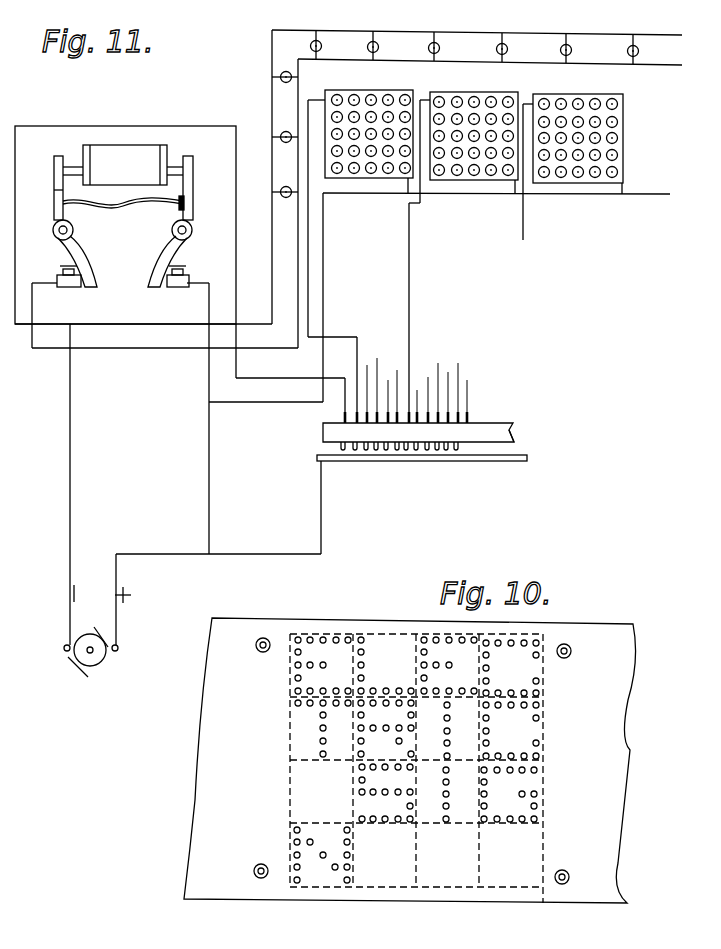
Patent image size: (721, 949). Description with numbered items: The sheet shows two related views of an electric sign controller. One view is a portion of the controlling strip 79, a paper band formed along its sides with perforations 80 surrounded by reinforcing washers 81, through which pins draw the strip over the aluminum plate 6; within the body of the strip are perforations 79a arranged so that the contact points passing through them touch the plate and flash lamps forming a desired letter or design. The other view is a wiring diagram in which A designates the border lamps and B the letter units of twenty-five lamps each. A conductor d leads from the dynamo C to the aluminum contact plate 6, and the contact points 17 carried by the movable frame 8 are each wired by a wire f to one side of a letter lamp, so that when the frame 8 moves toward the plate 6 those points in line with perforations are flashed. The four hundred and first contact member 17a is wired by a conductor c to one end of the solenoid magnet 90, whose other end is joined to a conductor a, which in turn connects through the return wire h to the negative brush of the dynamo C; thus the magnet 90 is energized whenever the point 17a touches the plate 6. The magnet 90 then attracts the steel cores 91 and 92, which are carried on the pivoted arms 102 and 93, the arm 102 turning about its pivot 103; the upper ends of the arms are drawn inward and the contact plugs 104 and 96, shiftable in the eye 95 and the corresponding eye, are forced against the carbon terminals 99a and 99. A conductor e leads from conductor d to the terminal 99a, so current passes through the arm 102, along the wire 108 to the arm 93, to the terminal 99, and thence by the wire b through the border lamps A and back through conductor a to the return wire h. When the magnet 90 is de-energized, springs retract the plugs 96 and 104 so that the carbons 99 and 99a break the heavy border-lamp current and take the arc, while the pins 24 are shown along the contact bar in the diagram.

In FIG. 11, the solenoid magnet 90 is at (130, 141).
In FIG. 11, the steel core 91 is at (184, 151).
In FIG. 11, the steel core 92 is at (76, 151).
In FIG. 11, the arm 93 is at (56, 189).
In FIG. 11, the eye 95 is at (98, 286).
In FIG. 11, the contact plug 96 is at (84, 292).
In FIG. 11, the carbon terminal 99 is at (82, 278).
In FIG. 11, the carbon terminal 99a is at (186, 261).
In FIG. 11, the arm 102 is at (193, 206).
In FIG. 11, the pivot 103 is at (199, 238).
In FIG. 11, the contact plug 104 is at (170, 290).
In FIG. 11, the wire 108 is at (128, 207).
In FIG. 11, the contact member 17 is at (468, 417).
In FIG. 11, the contact member 17a is at (343, 424).
In FIG. 11, the contact pins 24 is at (460, 375).
In FIG. 11, the movable frame 8 is at (522, 426).
In FIG. 11, the aluminum plate 6 is at (482, 465).
In FIG. 11, the border lamps A is at (477, 176).
In FIG. 11, the letter units B is at (478, 176).
In FIG. 11, the dynamo C is at (73, 652).
In FIG. 11, the conductor a is at (270, 320).
In FIG. 11, the wire b is at (478, 59).
In FIG. 11, the conductor c is at (388, 197).
In FIG. 11, the conductor d is at (143, 552).
In FIG. 11, the conductor e is at (209, 471).
In FIG. 11, the wire f is at (308, 299).
In FIG. 11, the return wire h is at (70, 487).
In FIG. 10, the controlling strip 79 is at (248, 627).
In FIG. 10, the perforations 79a is at (360, 637).
In FIG. 10, the perforations 80 is at (258, 650).
In FIG. 10, the reinforcing washers 81 is at (267, 640).